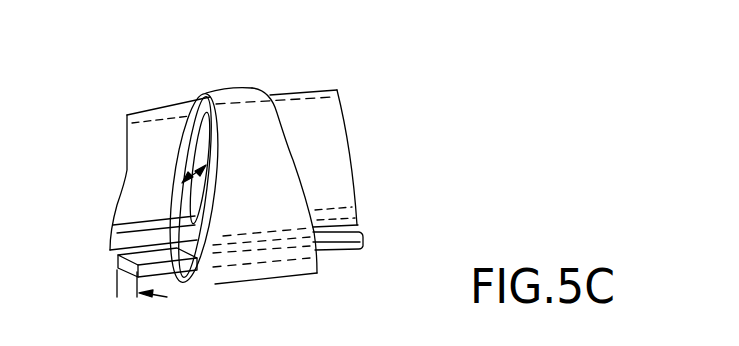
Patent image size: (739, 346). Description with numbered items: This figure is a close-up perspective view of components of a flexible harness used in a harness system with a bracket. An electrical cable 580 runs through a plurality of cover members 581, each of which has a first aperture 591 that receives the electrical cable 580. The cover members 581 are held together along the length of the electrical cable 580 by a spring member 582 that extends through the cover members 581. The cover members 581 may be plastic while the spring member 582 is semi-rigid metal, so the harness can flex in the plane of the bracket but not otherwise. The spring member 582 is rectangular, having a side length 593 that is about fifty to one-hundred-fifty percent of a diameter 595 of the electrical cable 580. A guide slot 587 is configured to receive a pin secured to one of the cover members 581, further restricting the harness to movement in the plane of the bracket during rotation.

The electrical cable 580 is at (140, 139).
The cover members 581 is at (297, 188).
The spring member 582 is at (341, 246).
The guide slot 587 is at (206, 96).
The first aperture 591 is at (200, 278).
The side length 593 is at (102, 275).
The diameter 595 is at (188, 176).